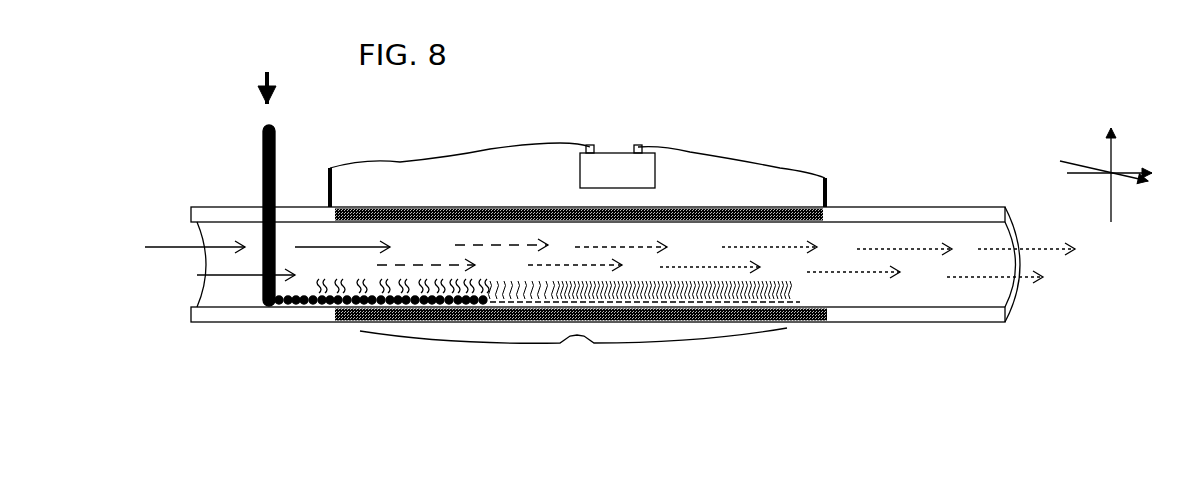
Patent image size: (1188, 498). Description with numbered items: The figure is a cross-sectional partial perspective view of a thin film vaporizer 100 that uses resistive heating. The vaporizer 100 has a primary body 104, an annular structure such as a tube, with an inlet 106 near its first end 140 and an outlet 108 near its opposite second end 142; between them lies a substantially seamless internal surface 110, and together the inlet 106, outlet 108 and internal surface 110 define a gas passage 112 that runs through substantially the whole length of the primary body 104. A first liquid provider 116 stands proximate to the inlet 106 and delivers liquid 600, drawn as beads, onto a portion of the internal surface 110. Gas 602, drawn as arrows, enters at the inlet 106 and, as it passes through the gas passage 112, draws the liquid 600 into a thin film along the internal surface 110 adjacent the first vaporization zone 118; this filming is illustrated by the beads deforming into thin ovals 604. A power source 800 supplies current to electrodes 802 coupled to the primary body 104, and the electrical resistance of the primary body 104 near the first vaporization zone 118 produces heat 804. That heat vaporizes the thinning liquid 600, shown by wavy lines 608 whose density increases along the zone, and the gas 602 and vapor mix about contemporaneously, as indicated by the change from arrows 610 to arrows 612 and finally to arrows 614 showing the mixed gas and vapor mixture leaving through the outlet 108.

The vaporizer 100 is at (940, 176).
The primary body 104 is at (852, 206).
The inlet 106 is at (190, 291).
The outlet 108 is at (997, 297).
The internal surface 110 is at (930, 296).
The gas passage 112 is at (870, 297).
The first liquid provider 116 is at (256, 157).
The first vaporization zone 118 is at (573, 350).
The first end 140 is at (190, 208).
The second end 142 is at (1012, 212).
The liquid 600 is at (263, 130).
The gas 602 is at (267, 251).
The thin ovals 604 is at (491, 303).
The wavy lines 608 is at (368, 289).
The arrows 610 is at (458, 245).
The arrows 612 is at (632, 247).
The arrows 614 is at (762, 247).
The power source 800 is at (627, 183).
The electrodes 802 is at (580, 182).
The heat 804 is at (810, 316).